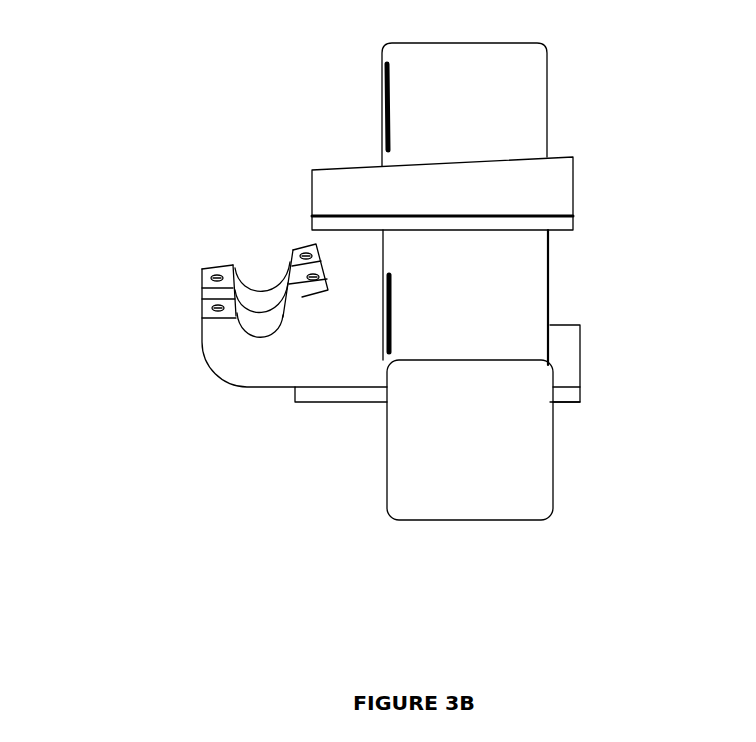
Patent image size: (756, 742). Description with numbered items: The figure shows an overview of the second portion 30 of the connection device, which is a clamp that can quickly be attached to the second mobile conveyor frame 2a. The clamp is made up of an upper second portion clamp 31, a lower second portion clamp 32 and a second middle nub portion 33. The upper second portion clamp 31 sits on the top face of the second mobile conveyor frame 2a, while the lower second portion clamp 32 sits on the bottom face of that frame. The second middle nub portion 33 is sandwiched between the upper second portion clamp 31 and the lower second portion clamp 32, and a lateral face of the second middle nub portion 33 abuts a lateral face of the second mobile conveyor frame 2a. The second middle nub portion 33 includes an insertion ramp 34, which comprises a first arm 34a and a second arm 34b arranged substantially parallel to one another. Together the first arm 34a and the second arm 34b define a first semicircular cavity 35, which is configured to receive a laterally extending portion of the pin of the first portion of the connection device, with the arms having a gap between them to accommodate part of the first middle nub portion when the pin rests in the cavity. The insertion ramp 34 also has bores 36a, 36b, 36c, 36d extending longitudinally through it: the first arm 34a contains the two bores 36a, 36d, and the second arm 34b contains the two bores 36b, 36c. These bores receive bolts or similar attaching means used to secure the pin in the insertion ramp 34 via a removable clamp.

The second mobile conveyor frame 2a is at (527, 293).
The second portion 30 is at (357, 425).
The upper second portion clamp 31 is at (550, 180).
The lower second portion clamp 32 is at (558, 380).
The second middle nub portion 33 is at (357, 320).
The insertion ramp 34 is at (228, 260).
The first arm 34a is at (223, 333).
The second arm 34b is at (213, 293).
The first semicircular cavity 35 is at (261, 280).
The bore 36a is at (213, 305).
The bore 36b is at (204, 270).
The bore 36c is at (313, 247).
The bore 36d is at (307, 293).